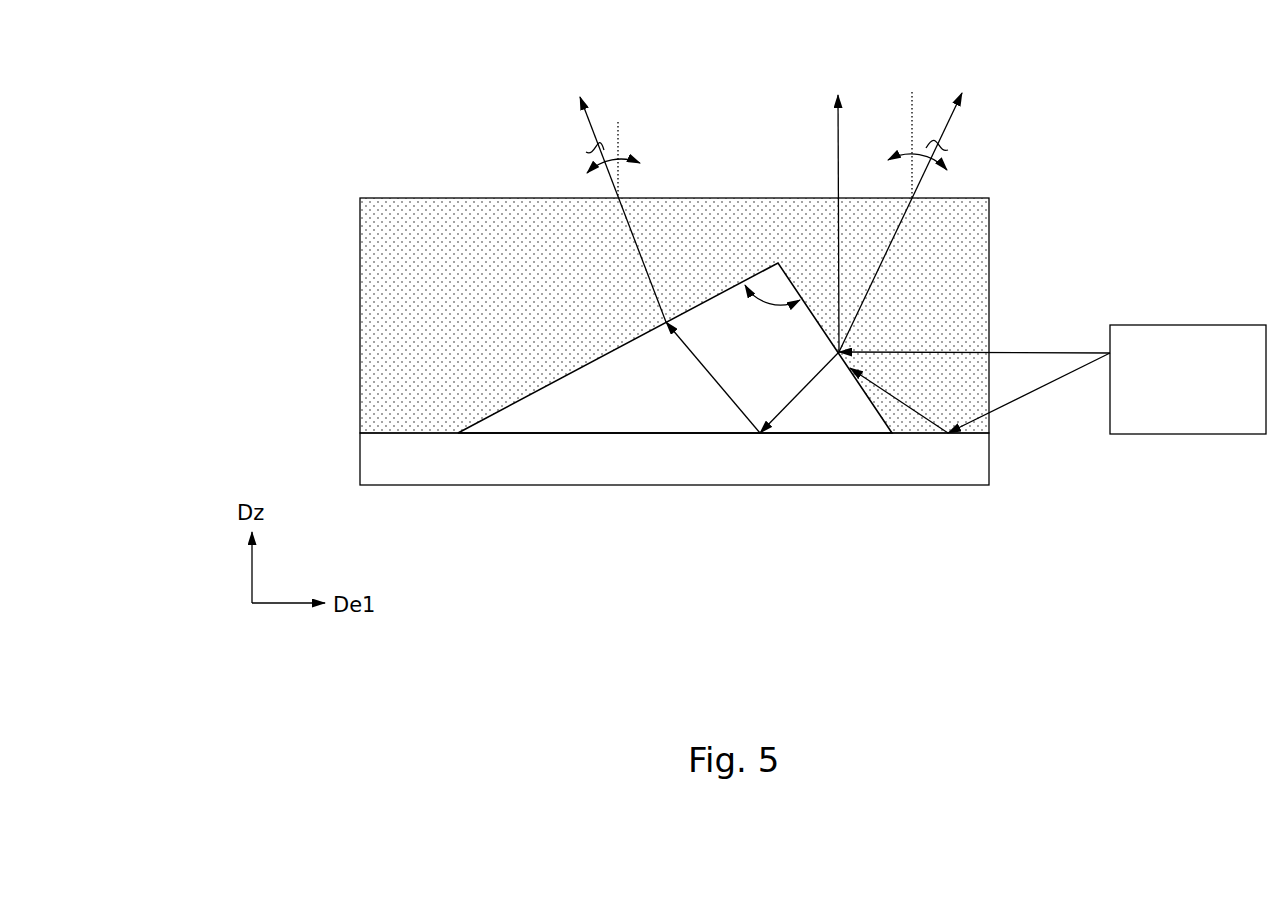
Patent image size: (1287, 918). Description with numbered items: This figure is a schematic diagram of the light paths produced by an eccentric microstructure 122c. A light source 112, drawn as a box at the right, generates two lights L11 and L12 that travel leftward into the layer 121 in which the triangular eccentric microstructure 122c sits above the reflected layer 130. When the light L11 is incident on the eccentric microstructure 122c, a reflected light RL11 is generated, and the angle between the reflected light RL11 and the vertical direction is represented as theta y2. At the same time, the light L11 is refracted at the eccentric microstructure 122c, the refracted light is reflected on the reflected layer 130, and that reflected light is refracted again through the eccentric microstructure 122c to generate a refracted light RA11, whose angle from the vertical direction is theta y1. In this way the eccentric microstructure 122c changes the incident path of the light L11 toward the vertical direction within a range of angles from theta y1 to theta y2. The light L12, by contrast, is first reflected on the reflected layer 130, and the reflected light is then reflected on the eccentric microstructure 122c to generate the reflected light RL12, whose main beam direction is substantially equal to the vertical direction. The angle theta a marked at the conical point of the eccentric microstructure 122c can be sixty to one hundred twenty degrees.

The light source 112 is at (1208, 393).
The light guide layer 121 is at (372, 318).
The eccentric microstructure 122c is at (460, 300).
The reflected layer 130 is at (412, 475).
The light L11 is at (974, 339).
The light L12 is at (980, 393).
The refracted light RA11 is at (596, 194).
The reflected light RL12 is at (834, 209).
The reflected light RL11 is at (923, 209).